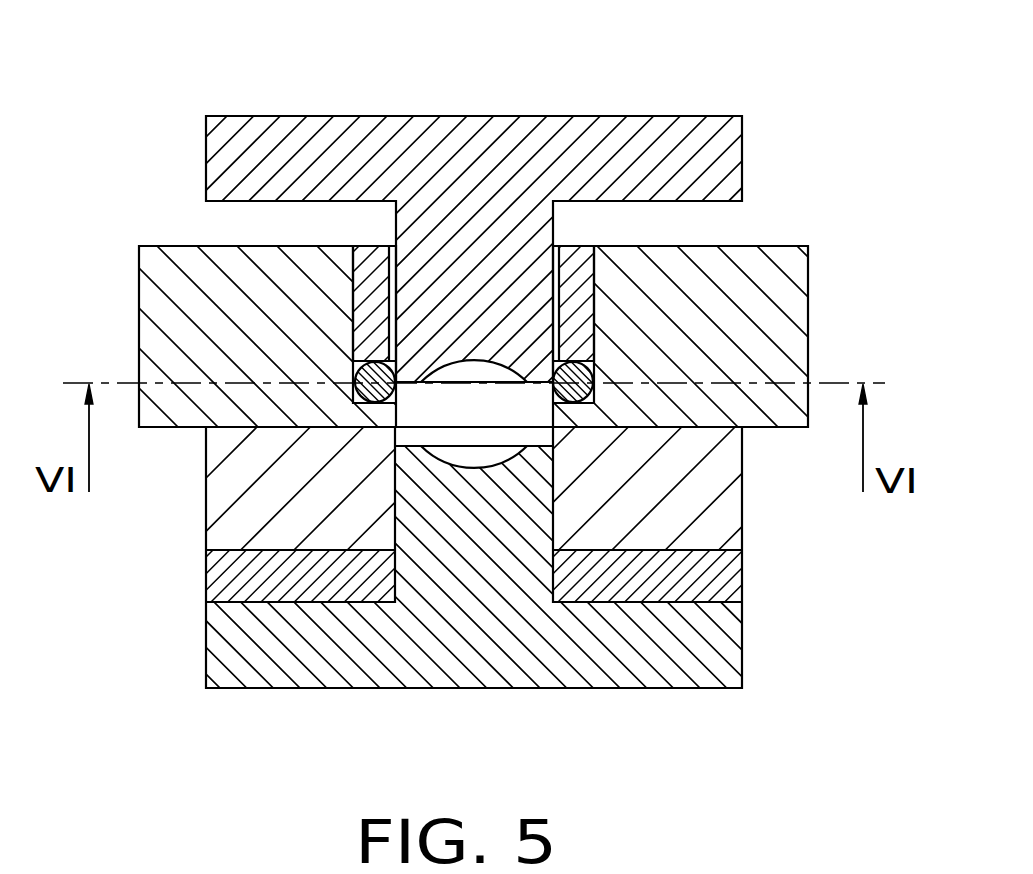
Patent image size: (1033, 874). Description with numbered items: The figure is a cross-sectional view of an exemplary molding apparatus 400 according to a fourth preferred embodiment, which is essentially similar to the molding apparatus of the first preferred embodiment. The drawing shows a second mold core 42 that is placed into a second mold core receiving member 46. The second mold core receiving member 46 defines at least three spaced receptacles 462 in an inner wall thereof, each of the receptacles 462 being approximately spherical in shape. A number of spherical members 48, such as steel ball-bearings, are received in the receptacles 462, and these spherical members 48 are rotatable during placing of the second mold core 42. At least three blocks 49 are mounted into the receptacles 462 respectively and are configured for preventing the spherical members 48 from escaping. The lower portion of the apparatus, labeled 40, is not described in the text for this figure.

The molding apparatus 400 is at (485, 50).
The second mold core 42 is at (678, 133).
The second mold core receiving member 46 is at (773, 325).
The block 49 is at (580, 308).
The receptacle 462 is at (594, 364).
The spherical member 48 is at (595, 400).
The lower mold base 40 is at (718, 660).